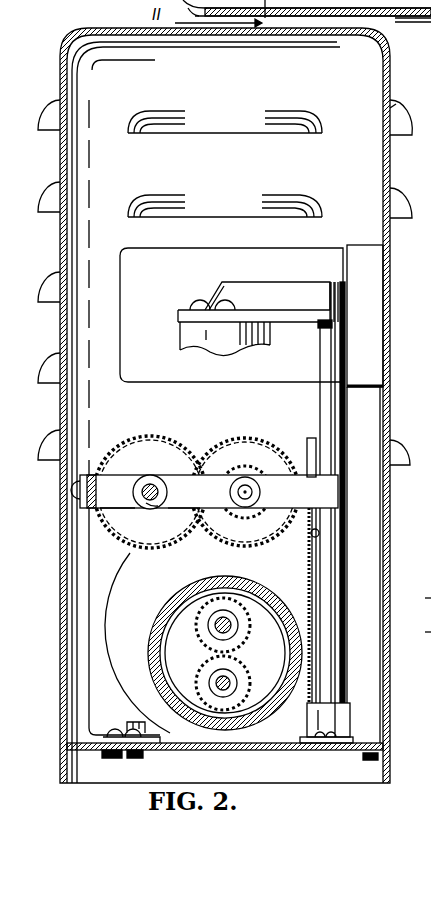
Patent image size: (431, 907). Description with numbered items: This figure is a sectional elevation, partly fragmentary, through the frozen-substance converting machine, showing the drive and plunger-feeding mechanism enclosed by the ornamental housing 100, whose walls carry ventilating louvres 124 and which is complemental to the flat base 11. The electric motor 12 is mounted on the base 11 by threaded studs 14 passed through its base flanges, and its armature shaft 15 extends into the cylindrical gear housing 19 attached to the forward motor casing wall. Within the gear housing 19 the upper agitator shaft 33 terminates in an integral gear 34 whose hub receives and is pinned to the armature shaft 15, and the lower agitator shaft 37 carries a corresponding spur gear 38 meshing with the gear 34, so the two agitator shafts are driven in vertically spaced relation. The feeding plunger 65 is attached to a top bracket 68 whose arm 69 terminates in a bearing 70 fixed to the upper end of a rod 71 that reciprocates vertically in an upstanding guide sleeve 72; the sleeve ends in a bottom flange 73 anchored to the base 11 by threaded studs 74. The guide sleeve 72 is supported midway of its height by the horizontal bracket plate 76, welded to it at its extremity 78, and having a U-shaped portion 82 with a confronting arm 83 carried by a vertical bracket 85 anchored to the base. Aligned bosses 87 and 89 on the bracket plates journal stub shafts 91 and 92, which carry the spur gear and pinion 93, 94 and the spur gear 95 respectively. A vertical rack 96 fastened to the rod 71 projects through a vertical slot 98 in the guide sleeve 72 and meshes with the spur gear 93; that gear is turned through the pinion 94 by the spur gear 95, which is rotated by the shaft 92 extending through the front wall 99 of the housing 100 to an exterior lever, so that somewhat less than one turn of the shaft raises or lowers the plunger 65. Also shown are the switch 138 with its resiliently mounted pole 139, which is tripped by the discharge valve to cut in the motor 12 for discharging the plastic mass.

The base 11 is at (390, 764).
The electric motor 12 is at (115, 628).
The threaded studs 14 is at (130, 730).
The armature shaft 15 is at (153, 748).
The gear housing 19 is at (165, 625).
The agitator shaft 33 is at (220, 622).
The gear 34 is at (246, 605).
The agitator shaft 37 is at (212, 686).
The spur gear 38 is at (250, 680).
The plunger 65 is at (186, 338).
The top bracket 68 is at (212, 300).
The arm 69 is at (268, 298).
The bearing 70 is at (332, 300).
The rod 71 is at (318, 326).
The guide sleeve 72 is at (336, 392).
The bottom flange 73 is at (352, 742).
The threaded studs 74 is at (343, 730).
The bracket plate 76 is at (181, 497).
The extremity 78 is at (330, 493).
The U-shaped portion 82 is at (101, 485).
The arm 83 is at (118, 497).
The vertical bracket 85 is at (84, 598).
The boss 87 is at (230, 494).
The boss 89 is at (146, 508).
The stub shaft 91 is at (262, 496).
The stub shaft 92 is at (150, 483).
The spur gear 93 is at (273, 438).
The pinion 94 is at (225, 468).
The spur gear 95 is at (137, 432).
The vertical rack 96 is at (308, 592).
The vertical slot 98 is at (320, 539).
The front wall 99 is at (407, 446).
The housing 100 is at (393, 110).
The louvres 124 is at (57, 112).
The switch 138 is at (415, 632).
The resiliently mounted pole 139 is at (415, 599).